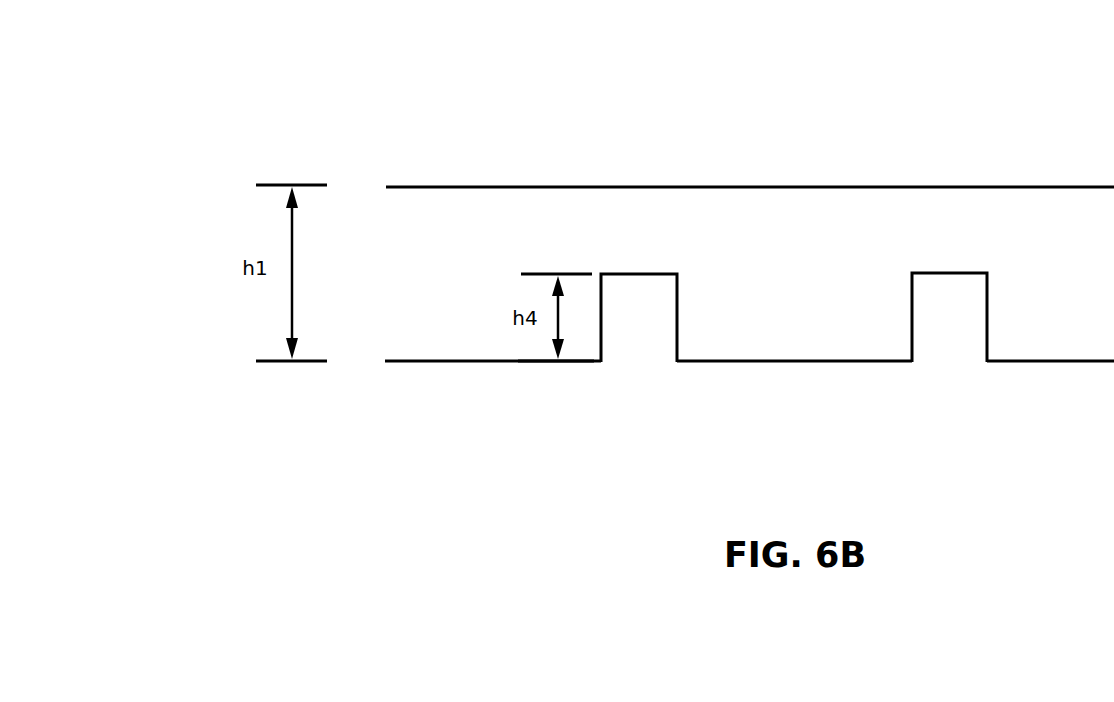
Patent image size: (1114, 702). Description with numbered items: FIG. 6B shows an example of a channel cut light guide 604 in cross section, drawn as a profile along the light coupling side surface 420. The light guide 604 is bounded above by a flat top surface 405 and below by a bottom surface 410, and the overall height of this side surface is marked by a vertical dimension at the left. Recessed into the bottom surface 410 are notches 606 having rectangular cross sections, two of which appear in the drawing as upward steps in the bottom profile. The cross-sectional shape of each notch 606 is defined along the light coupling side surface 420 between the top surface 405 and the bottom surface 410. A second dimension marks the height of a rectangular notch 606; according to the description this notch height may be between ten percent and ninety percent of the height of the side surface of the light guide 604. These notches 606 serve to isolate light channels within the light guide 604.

The light guide 604 is at (787, 222).
The top surface 405 is at (672, 185).
The bottom surface 410 is at (1023, 358).
The notches 606 is at (642, 338).
The light coupling side surface 420 is at (443, 245).